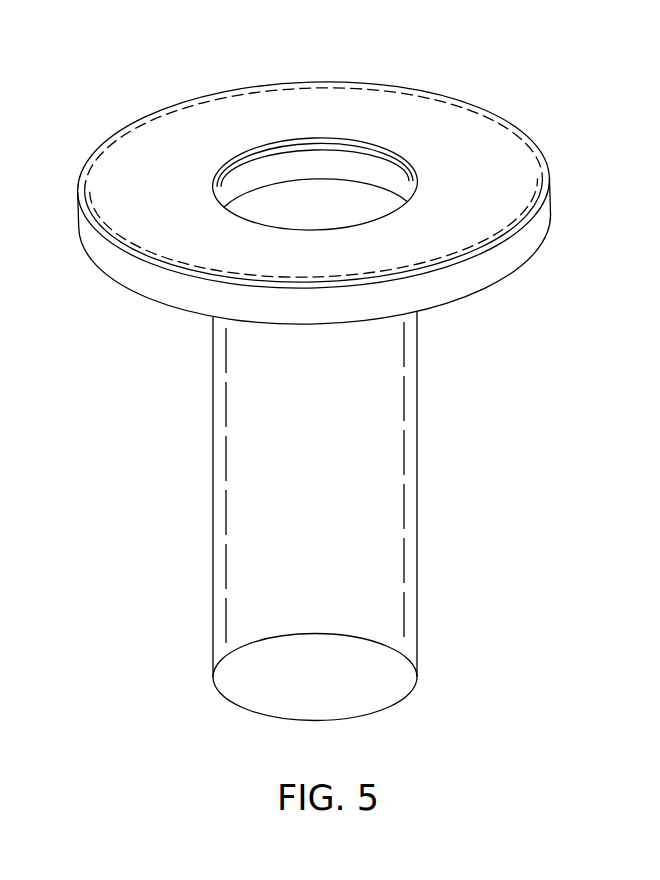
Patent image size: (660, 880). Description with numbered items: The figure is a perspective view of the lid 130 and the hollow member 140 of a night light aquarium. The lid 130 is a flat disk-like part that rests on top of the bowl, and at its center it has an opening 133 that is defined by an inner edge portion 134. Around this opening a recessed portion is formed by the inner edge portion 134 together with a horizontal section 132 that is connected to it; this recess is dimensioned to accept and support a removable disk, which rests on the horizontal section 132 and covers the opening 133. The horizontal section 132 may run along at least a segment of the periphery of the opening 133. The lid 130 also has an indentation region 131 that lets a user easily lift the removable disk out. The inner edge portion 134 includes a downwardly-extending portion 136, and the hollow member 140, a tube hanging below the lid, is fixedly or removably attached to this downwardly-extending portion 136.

The lid 130 is at (551, 169).
The indentation region 131 is at (358, 227).
The horizontal section 132 is at (252, 158).
The opening 133 is at (344, 202).
The inner edge portion 134 is at (258, 153).
The downwardly-extending portion 136 is at (338, 173).
The hollow member 140 is at (417, 489).